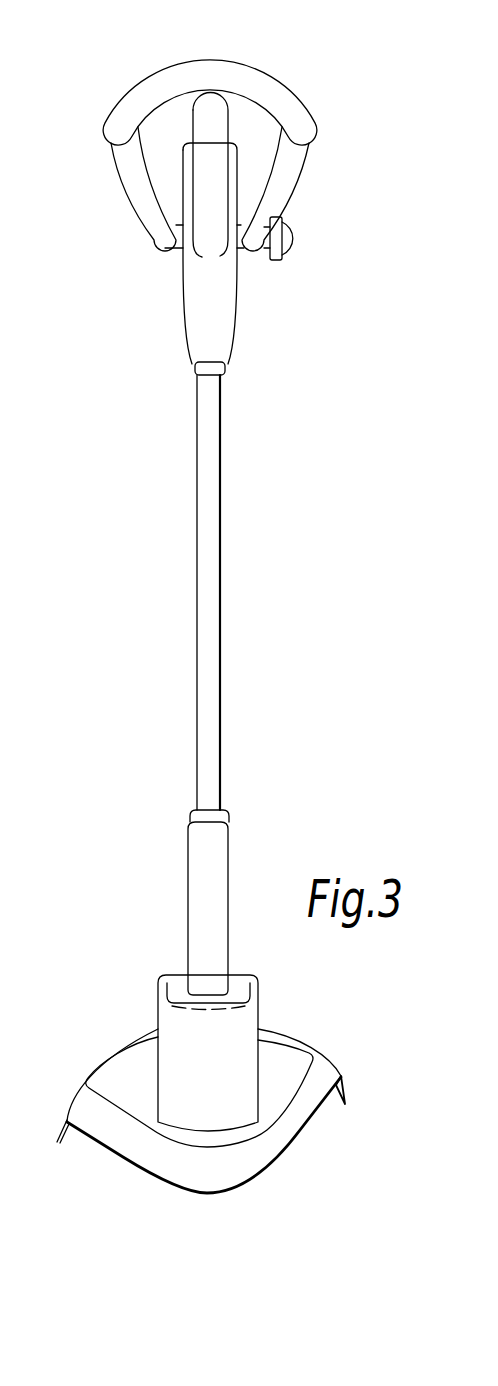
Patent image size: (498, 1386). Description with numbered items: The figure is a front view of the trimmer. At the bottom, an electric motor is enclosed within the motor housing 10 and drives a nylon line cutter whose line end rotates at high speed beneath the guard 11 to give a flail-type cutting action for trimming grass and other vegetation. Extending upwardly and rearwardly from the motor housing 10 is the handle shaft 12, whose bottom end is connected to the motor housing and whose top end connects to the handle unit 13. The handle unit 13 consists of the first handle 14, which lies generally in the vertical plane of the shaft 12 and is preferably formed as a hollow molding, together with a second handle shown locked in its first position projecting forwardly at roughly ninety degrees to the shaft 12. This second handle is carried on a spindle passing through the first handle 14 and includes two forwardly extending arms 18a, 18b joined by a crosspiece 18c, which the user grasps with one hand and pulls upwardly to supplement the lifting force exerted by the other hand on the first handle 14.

The motor housing 10 is at (183, 1040).
The guard 11 is at (138, 1147).
The handle shaft 12 is at (208, 683).
The handle unit 13 is at (160, 335).
The first handle 14 is at (218, 302).
The forwardly extending arm 18a is at (140, 168).
The forwardly extending arm 18b is at (273, 173).
The crosspiece 18c is at (258, 83).